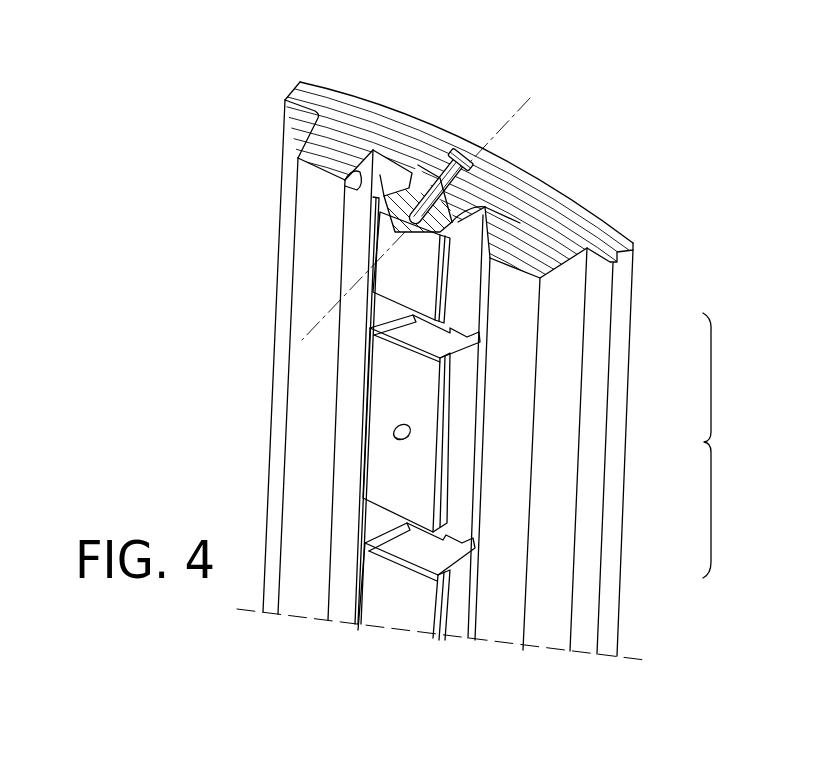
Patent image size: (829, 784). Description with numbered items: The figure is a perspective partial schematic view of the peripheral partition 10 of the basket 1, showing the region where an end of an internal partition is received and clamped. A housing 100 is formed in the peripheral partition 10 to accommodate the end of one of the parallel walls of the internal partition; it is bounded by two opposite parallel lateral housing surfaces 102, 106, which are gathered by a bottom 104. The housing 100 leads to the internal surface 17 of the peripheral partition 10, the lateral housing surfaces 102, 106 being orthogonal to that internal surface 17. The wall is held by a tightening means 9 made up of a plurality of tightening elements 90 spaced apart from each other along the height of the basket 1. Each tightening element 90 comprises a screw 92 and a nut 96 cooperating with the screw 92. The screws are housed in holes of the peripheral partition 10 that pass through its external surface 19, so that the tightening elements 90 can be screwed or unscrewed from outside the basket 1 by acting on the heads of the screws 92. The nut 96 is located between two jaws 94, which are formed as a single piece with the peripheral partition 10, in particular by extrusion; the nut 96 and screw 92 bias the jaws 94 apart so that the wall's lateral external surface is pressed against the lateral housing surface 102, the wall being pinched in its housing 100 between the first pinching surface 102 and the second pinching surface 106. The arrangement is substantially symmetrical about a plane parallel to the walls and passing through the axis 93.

The basket 1 is at (622, 166).
The tightening means 9 is at (717, 445).
The peripheral partition 10 is at (612, 240).
The internal surface 17 is at (307, 177).
The external surface 19 is at (542, 183).
The tightening element 90 is at (474, 298).
The screw 92 is at (432, 150).
The axis 93 is at (530, 98).
The jaw 94 is at (448, 222).
The nut 96 is at (452, 207).
The housing 100 is at (355, 212).
The lateral housing surface 102 is at (355, 189).
The bottom 104 is at (421, 152).
The lateral housing surface 106 is at (398, 188).